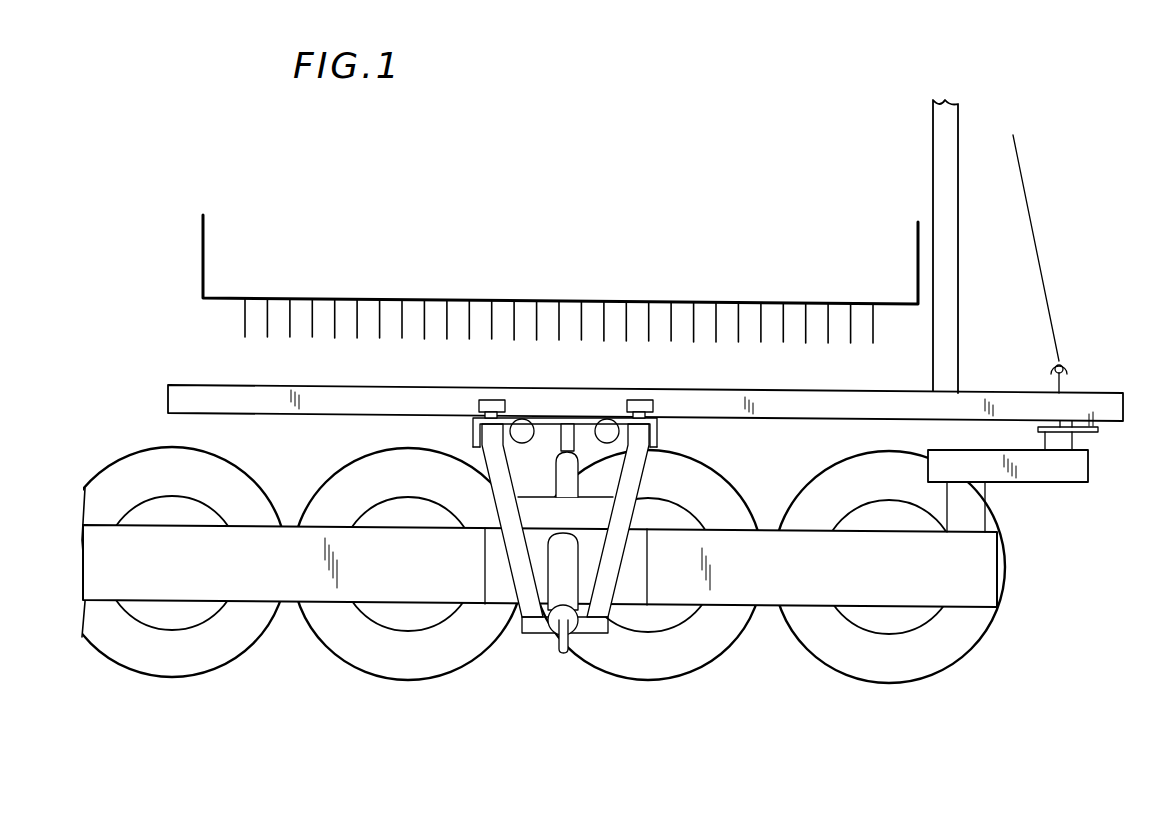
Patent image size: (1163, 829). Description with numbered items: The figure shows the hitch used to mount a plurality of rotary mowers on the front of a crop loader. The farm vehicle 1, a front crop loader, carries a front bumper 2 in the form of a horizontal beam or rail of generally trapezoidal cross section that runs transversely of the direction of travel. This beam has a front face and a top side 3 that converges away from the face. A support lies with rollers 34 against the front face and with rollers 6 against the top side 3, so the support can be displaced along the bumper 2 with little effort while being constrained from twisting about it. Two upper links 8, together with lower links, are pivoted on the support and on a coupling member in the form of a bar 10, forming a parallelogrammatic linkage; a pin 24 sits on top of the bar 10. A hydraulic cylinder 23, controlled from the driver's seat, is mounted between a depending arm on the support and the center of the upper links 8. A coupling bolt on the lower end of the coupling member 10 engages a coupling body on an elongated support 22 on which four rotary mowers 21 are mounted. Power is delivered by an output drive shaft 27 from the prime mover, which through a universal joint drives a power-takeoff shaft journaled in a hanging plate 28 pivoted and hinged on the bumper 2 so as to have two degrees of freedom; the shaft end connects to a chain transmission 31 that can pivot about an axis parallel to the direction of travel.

The farm vehicle 1 is at (938, 152).
The front bumper 2 is at (205, 385).
The top side 3 is at (842, 378).
The rollers 6 is at (492, 400).
The upper links 8 is at (497, 475).
The coupling member 10 is at (563, 548).
The rotary mowers 21 is at (232, 640).
The elongated support 22 is at (815, 575).
The hydraulic cylinder 23 is at (568, 481).
The pin 24 is at (560, 645).
The output drive shaft 27 is at (1022, 175).
The hanging plate 28 is at (1092, 433).
The chain transmission 31 is at (1047, 472).
The rollers 34 is at (523, 426).